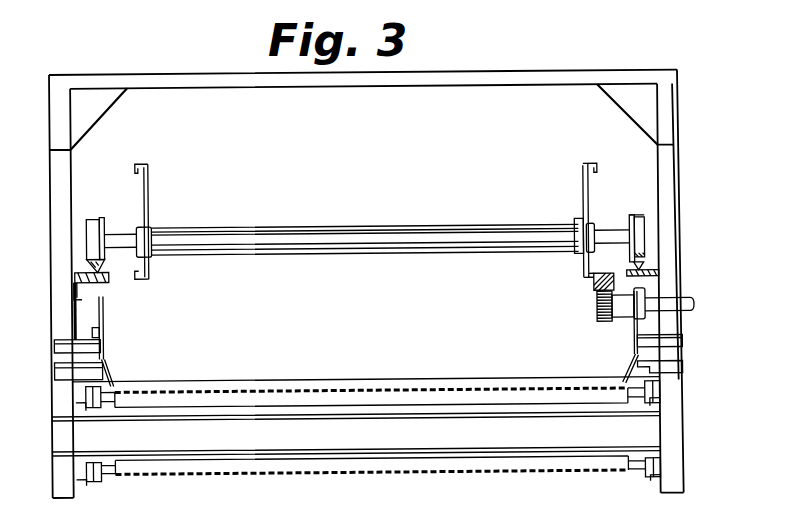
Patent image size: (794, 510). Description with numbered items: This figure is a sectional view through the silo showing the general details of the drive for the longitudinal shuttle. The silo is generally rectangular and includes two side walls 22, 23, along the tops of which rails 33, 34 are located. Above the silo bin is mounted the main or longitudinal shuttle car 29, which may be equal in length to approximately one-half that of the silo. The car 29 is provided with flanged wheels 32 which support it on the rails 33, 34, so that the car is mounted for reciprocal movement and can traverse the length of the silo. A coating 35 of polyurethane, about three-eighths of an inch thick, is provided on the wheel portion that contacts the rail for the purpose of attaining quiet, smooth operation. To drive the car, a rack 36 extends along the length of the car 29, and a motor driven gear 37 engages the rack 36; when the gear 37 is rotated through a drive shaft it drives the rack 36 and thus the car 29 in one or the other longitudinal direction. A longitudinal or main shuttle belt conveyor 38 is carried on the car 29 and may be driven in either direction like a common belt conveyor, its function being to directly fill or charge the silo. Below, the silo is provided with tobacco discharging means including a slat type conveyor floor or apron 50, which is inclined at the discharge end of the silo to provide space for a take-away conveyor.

The side wall 22 is at (102, 354).
The side wall 23 is at (631, 348).
The longitudinal shuttle car 29 is at (367, 218).
The flanged wheels 32 is at (97, 207).
The rail 33 is at (79, 268).
The rail 34 is at (639, 273).
The coating 35 is at (637, 222).
The rack 36 is at (591, 289).
The motor driven gear 37 is at (595, 318).
The longitudinal shuttle belt conveyor 38 is at (332, 231).
The slat type conveyor floor 50 is at (368, 390).